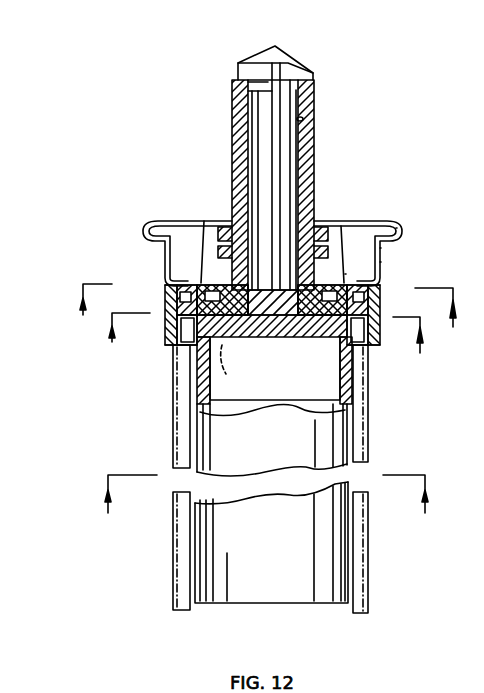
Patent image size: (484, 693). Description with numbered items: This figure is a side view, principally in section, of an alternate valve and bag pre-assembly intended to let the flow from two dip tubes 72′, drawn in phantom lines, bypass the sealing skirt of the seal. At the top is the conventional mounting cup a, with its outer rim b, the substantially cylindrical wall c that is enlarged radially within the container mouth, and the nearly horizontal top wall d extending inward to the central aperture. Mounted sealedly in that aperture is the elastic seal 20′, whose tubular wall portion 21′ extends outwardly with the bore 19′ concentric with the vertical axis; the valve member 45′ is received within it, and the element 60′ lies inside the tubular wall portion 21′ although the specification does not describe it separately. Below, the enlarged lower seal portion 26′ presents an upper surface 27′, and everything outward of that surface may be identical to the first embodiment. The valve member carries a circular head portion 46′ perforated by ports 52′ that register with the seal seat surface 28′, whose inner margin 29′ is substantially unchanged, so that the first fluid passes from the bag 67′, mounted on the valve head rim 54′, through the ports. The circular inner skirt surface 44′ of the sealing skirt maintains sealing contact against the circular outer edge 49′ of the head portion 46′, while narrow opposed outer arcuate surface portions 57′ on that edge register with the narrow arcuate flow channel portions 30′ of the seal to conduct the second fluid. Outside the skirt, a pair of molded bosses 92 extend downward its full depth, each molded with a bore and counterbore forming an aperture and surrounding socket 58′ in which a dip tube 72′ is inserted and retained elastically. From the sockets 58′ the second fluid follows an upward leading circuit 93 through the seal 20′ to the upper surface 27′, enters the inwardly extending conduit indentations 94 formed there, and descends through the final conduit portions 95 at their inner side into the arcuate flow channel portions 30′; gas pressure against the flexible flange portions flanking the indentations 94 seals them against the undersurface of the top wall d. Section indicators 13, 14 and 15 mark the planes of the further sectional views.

The elastic seal 20′ is at (318, 174).
The tubular wall portion 21′ is at (314, 132).
The bore 19′ is at (303, 118).
The inner passage 60′ is at (258, 121).
The enlarged lower seal portion 26′ is at (213, 288).
The valve member 45′ is at (272, 248).
The conduit indentations 94 is at (165, 264).
The final conduit portions 95 is at (191, 281).
The upper surface 27′ is at (345, 278).
The mounting cup a is at (384, 248).
The outer rim b is at (397, 231).
The substantially cylindrical wall c is at (382, 262).
The nearly horizontal wall portion d is at (338, 271).
The narrow arcuate flow channel portions 30′ is at (242, 298).
The inner margin 29′ is at (238, 332).
The seal seat surface 28′ is at (297, 338).
The head portion 46′ is at (327, 341).
The inner skirt surface 44′ is at (198, 366).
The ports 52′ is at (222, 370).
The aperture and surrounding socket 58′ is at (177, 322).
The upward leading circuit 93 is at (167, 291).
The outer arcuate surface portions 57′ is at (374, 303).
The circular outer edge 49′ is at (178, 336).
The molded bosses 92 is at (173, 346).
The valve head rim 54′ is at (218, 402).
The dip tubes 72′ is at (174, 560).
The bag 67′ is at (271, 590).
The section line 13 is at (270, 344).
The section line 14 is at (271, 322).
The section line 15 is at (268, 508).